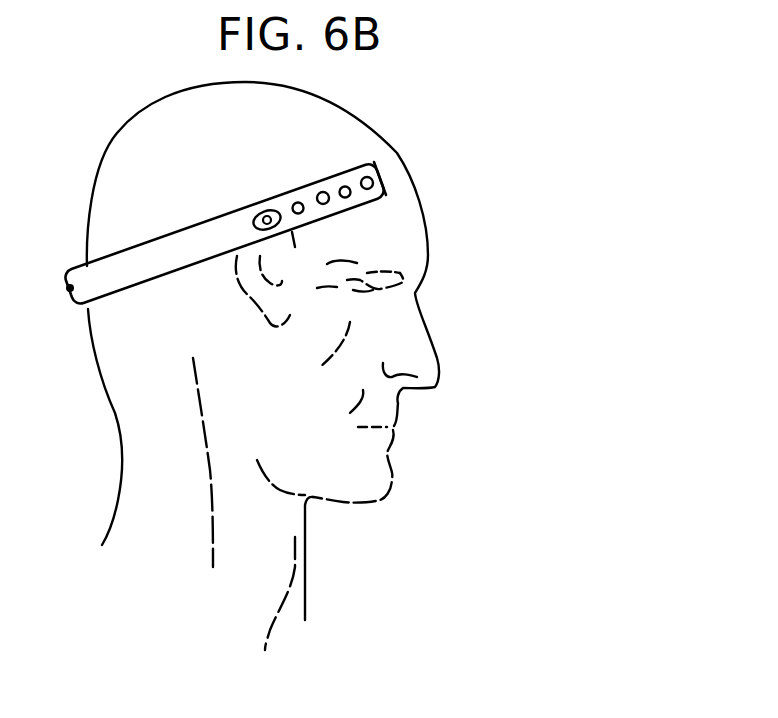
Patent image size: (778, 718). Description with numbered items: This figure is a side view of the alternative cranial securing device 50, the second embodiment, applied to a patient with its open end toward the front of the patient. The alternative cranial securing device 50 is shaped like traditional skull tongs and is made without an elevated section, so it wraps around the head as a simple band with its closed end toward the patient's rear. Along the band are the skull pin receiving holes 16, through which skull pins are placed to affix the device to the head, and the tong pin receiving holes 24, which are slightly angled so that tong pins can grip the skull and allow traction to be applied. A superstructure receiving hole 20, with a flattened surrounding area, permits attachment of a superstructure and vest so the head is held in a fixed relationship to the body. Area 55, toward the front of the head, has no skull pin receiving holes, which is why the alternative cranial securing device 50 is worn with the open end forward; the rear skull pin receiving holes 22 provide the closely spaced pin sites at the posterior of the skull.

The skull pin receiving holes 16 is at (346, 198).
The superstructure receiving hole 20 is at (267, 211).
The rear skull pin receiving holes 22 is at (70, 288).
The tong pin receiving holes 24 is at (362, 177).
The alternative cranial securing device 50 is at (374, 163).
The area 55 is at (166, 250).